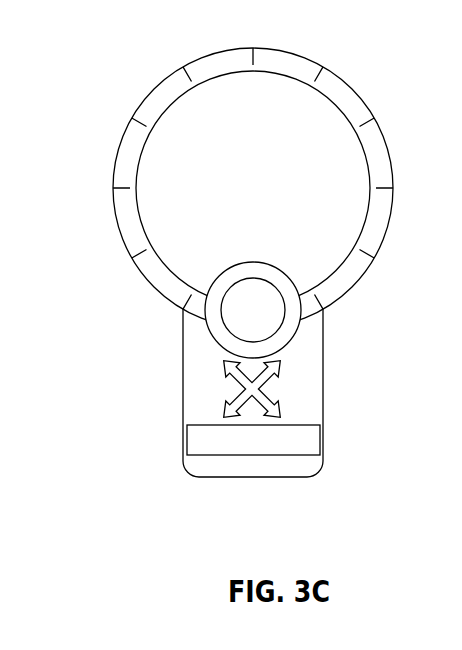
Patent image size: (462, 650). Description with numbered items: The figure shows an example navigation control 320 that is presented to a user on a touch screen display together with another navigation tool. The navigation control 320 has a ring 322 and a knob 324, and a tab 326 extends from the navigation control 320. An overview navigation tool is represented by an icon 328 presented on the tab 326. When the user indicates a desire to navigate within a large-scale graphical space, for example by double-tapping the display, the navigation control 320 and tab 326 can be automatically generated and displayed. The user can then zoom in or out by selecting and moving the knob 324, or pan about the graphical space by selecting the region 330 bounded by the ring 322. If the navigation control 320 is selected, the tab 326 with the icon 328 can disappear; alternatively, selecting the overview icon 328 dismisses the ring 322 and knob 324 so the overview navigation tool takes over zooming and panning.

The navigation control 320 is at (314, 58).
The ring 322 is at (372, 162).
The knob 324 is at (248, 300).
The tab 326 is at (311, 355).
The icon 328 is at (187, 455).
The region 330 is at (347, 215).